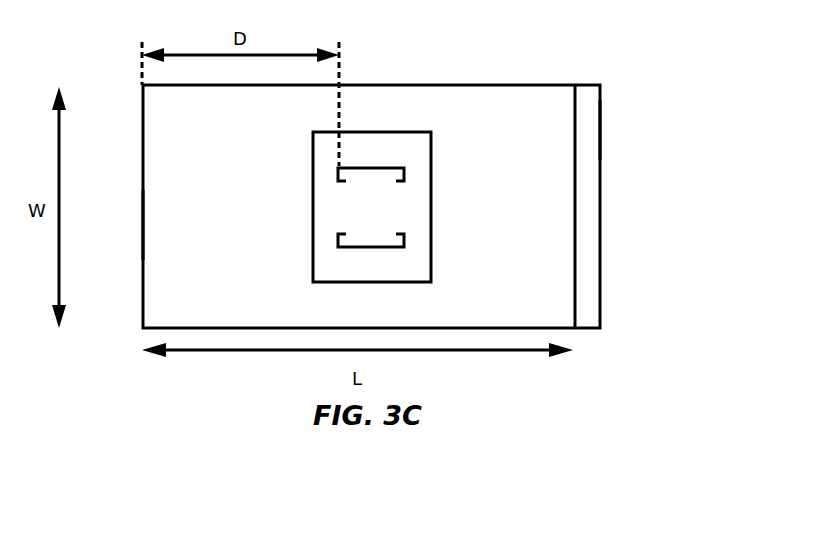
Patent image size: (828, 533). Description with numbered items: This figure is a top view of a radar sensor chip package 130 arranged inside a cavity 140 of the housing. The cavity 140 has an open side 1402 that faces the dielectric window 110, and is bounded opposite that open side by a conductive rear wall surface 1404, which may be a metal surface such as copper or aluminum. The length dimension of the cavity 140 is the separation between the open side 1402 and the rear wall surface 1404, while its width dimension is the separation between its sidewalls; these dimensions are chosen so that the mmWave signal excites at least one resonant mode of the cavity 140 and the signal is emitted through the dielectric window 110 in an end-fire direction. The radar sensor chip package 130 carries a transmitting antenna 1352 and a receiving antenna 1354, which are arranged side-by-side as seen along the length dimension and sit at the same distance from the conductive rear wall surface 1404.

The cavity 140 is at (170, 155).
The dielectric window 110 is at (585, 142).
The open side 1402 is at (628, 142).
The conductive rear wall surface 1404 is at (143, 228).
The radar sensor chip package 130 is at (398, 147).
The transmitting antenna 1352 is at (403, 168).
The receiving antenna 1354 is at (368, 248).